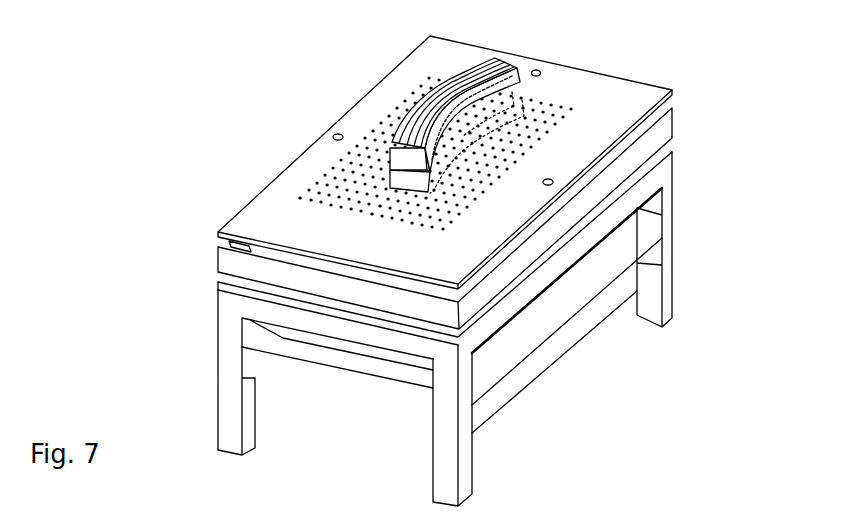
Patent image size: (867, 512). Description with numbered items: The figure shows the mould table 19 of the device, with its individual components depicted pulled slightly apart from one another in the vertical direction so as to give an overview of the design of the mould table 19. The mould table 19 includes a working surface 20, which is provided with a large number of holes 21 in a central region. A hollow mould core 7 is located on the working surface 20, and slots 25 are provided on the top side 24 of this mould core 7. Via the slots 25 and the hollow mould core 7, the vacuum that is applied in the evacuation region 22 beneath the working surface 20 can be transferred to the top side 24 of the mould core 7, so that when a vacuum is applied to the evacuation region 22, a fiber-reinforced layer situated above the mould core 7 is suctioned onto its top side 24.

The hollow mould core 7 is at (412, 101).
The mould table 19 is at (697, 88).
The working surface 20 is at (617, 90).
The holes 21 is at (323, 193).
The evacuation region 22 is at (657, 130).
The top side 24 is at (450, 75).
The slots 25 is at (395, 128).